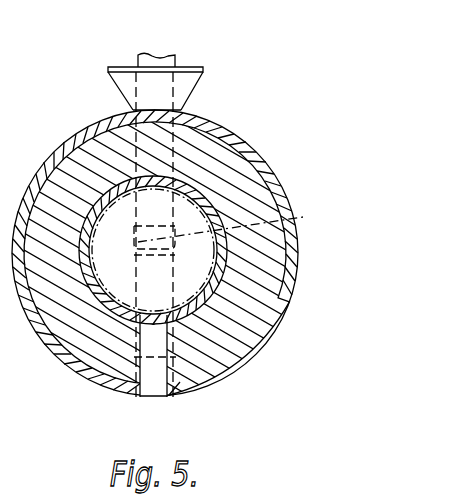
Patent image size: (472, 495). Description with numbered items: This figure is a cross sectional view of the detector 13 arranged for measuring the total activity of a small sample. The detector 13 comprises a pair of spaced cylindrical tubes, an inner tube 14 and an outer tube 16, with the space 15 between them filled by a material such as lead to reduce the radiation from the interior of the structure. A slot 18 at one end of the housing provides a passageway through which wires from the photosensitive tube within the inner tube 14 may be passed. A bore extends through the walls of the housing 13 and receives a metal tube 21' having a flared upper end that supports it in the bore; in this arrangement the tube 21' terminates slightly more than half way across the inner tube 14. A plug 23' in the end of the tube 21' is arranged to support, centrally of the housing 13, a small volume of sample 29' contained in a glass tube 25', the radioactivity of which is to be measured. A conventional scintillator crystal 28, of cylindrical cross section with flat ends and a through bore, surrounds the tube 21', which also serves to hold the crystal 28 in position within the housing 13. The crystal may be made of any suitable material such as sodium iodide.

The detector 13 is at (86, 117).
The inner tube 14 is at (213, 286).
The space 15 is at (243, 180).
The outer tube 16 is at (236, 143).
The slot 18 is at (143, 371).
The tube 21' is at (185, 229).
The plug 23' is at (158, 390).
The glass tube 25' is at (177, 44).
The scintillator crystal 28 is at (190, 285).
The sample 29' is at (238, 221).